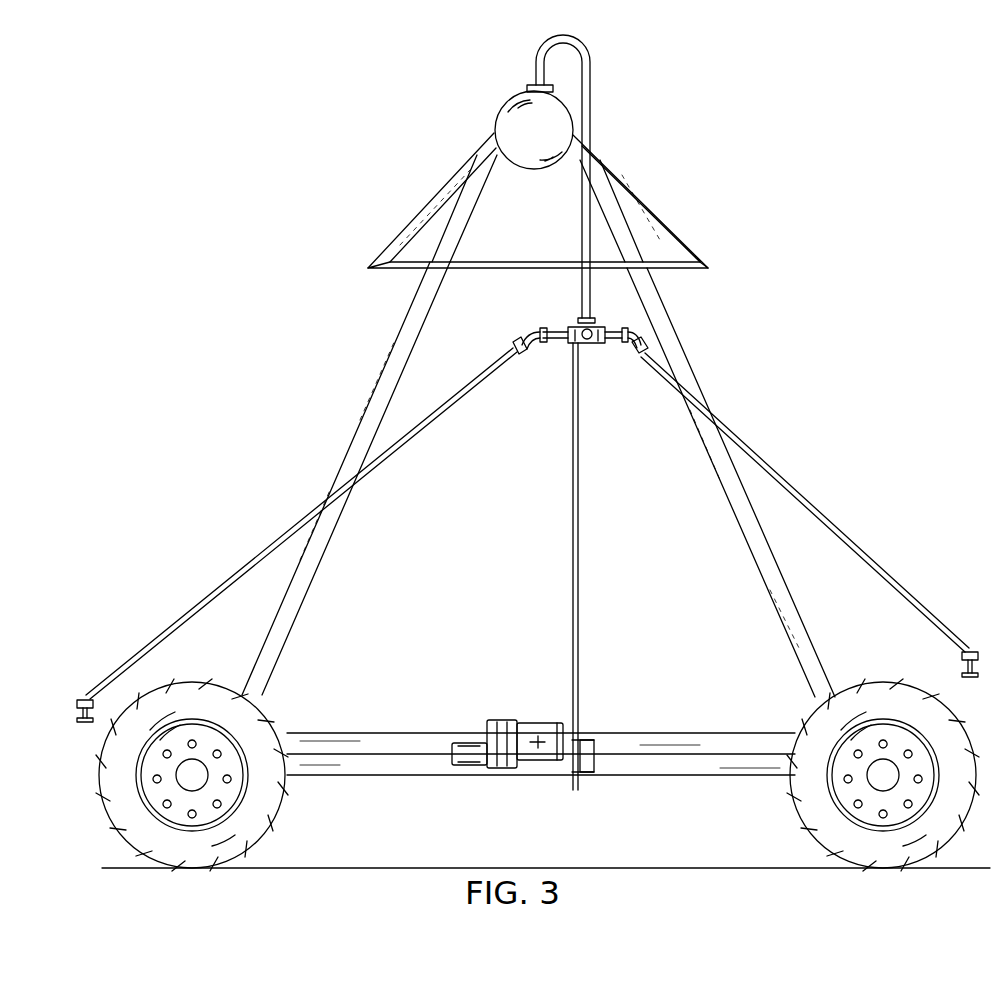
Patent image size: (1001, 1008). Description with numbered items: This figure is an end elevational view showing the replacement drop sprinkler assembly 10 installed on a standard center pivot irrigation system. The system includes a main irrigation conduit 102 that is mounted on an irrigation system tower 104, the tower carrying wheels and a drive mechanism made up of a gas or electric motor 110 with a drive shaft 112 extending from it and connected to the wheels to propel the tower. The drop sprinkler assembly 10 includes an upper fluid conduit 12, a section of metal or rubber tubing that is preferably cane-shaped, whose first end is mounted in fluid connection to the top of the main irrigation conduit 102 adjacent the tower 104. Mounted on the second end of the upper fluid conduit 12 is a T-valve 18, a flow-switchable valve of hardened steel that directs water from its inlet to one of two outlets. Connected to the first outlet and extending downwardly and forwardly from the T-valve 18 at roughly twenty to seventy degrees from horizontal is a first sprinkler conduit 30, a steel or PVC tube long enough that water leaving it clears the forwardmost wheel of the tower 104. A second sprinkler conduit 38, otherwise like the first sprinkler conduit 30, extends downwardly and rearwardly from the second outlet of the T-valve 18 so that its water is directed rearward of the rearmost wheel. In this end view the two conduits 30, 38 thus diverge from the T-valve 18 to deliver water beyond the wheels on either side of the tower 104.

The drop sprinkler assembly 10 is at (680, 196).
The upper fluid conduit 12 is at (590, 68).
The T-valve 18 is at (604, 327).
The first sprinkler conduit 30 is at (810, 497).
The second sprinkler conduit 38 is at (243, 567).
The main irrigation conduit 102 is at (533, 125).
The irrigation system tower 104 is at (375, 405).
The motor 110 is at (535, 780).
The drive shaft 112 is at (705, 770).